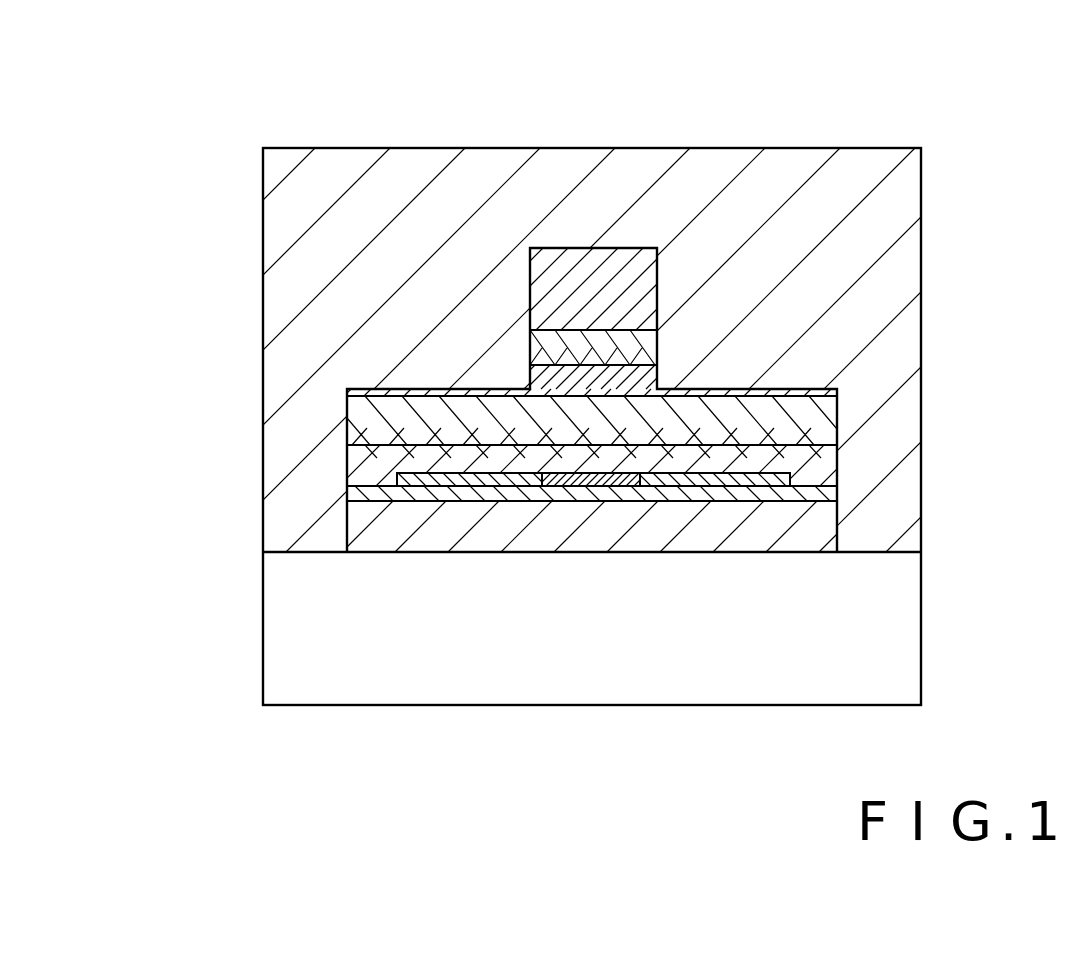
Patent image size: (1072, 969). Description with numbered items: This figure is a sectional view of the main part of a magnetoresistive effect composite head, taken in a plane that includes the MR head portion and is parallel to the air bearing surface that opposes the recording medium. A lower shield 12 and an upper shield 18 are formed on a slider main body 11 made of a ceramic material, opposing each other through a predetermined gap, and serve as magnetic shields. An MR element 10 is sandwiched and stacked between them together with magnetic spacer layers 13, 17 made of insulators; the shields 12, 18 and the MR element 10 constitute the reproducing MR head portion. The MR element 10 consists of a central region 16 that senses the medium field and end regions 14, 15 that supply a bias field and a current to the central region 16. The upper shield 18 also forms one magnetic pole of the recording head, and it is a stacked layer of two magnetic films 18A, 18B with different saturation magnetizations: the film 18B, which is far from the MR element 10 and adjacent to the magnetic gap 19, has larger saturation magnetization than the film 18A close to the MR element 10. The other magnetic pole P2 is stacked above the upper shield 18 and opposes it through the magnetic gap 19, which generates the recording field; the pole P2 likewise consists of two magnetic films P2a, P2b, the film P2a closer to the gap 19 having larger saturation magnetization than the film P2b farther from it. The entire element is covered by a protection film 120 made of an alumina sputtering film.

The MR element 10 is at (593, 659).
The slider main body 11 is at (297, 624).
The lower shield 12 is at (820, 527).
The magnetic spacer layer 13 is at (837, 490).
The end region 14 is at (462, 480).
The end region 15 is at (722, 486).
The central region 16 is at (596, 486).
The magnetic spacer layer 17 is at (812, 460).
The upper shield 18 is at (622, 398).
The magnetic film 18A is at (365, 413).
The magnetic film 18B is at (347, 392).
The magnetic gap 19 is at (657, 375).
The protection film 120 is at (350, 180).
The magnetic pole P2 is at (634, 186).
The magnetic film P2a is at (657, 340).
The magnetic film P2b is at (632, 258).